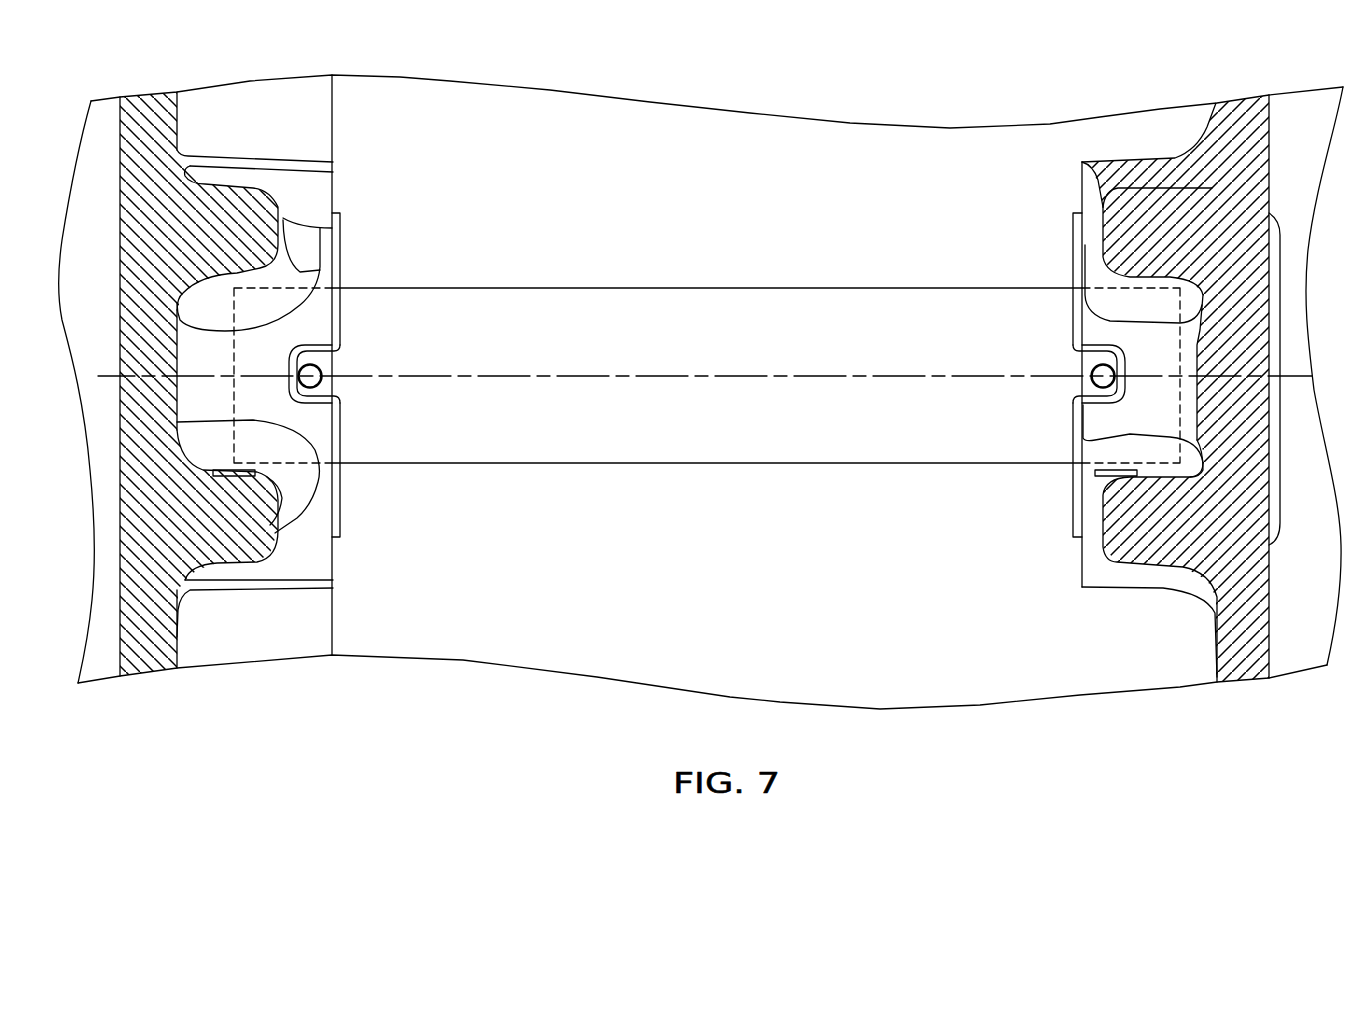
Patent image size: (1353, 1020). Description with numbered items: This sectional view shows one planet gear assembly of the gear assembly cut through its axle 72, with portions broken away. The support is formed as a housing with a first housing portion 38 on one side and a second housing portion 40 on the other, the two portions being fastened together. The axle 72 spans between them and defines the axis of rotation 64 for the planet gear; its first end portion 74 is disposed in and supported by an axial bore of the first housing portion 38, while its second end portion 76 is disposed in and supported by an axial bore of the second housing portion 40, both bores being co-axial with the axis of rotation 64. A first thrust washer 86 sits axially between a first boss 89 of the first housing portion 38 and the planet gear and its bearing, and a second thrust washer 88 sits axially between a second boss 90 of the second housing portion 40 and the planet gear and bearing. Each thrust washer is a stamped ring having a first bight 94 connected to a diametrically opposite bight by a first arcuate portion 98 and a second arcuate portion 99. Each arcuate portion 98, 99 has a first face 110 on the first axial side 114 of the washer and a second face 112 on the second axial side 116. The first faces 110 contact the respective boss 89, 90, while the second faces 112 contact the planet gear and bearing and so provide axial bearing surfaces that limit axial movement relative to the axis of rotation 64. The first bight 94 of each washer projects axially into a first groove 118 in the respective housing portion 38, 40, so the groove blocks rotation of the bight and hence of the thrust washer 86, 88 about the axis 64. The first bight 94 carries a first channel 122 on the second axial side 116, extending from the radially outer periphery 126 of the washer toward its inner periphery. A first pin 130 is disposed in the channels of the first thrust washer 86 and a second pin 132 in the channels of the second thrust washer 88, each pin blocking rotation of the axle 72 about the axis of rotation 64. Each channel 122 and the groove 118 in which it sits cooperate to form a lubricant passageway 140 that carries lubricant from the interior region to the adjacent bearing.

The first housing portion 38 is at (147, 645).
The second housing portion 40 is at (1240, 653).
The axis of rotation 64 is at (595, 382).
The axle 72 is at (585, 288).
The first end portion 74 is at (313, 492).
The second end portion 76 is at (1097, 468).
The first thrust washer 86 is at (352, 214).
The second thrust washer 88 is at (1060, 215).
The first boss 89 is at (334, 566).
The second boss 90 is at (1080, 567).
The first bight 94 is at (275, 361).
The first arcuate portion 98 is at (340, 537).
The second arcuate portion 99 is at (343, 237).
The first face 110 is at (332, 225).
The second face 112 is at (343, 257).
The first axial side 114 is at (305, 228).
The second axial side 116 is at (343, 278).
The first groove 118 is at (318, 408).
The first channel 122 is at (290, 378).
The radially outer periphery 126 is at (343, 555).
The first pin 130 is at (323, 374).
The second pin 132 is at (1091, 373).
The lubricant passageway 140 is at (303, 352).